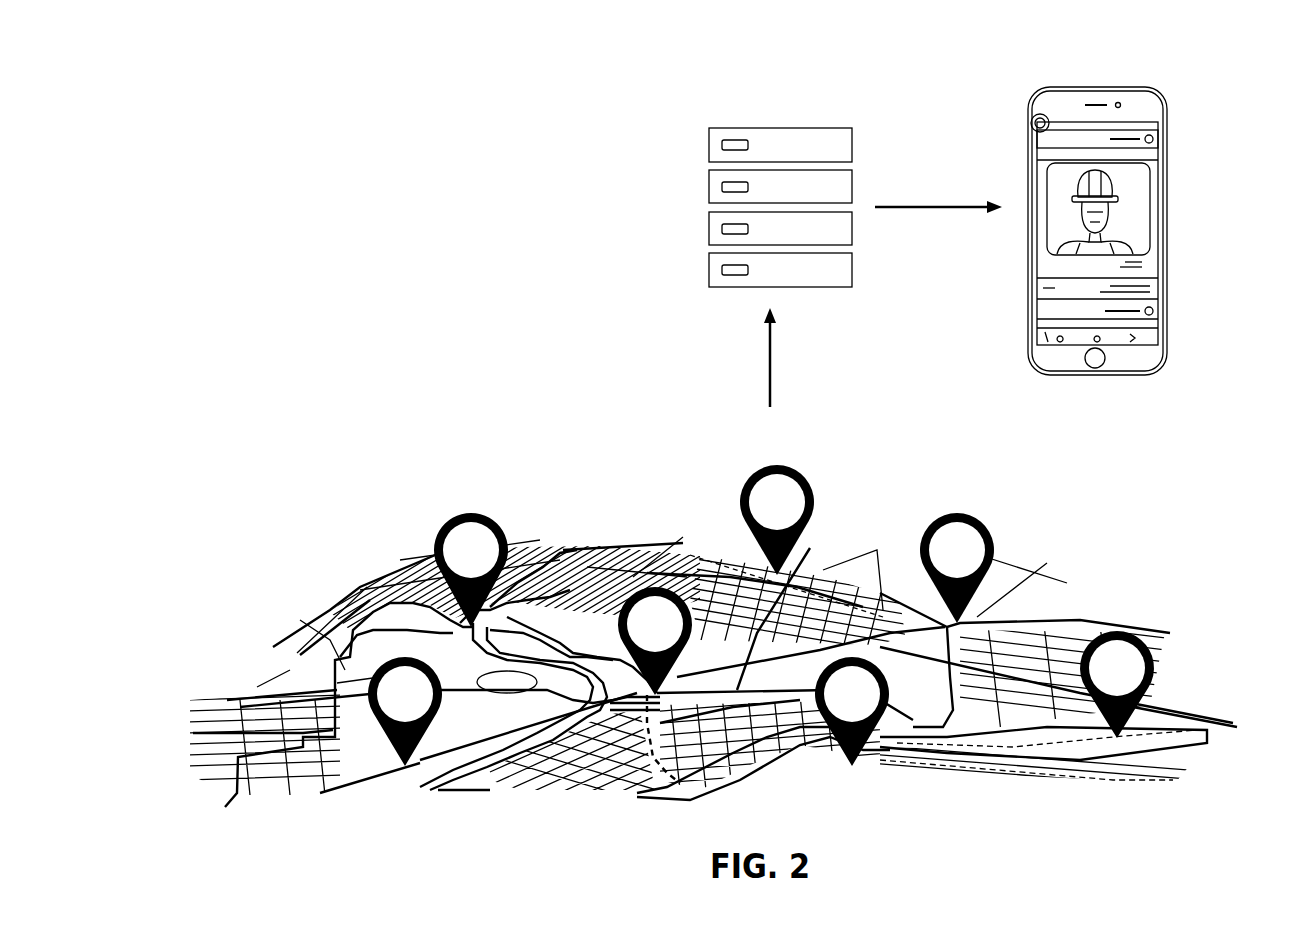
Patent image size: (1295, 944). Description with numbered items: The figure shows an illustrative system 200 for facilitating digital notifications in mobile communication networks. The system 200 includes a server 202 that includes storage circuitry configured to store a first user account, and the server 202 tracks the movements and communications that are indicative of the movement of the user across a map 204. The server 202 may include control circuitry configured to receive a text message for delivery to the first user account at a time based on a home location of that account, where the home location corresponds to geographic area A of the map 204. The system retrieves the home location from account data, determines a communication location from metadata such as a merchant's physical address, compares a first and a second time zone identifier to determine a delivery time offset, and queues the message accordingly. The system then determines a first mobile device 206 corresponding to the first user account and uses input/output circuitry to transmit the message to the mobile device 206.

The system 200 is at (763, 66).
The server 202 is at (675, 155).
The map 204 is at (1128, 597).
The mobile device 206 is at (1190, 224).